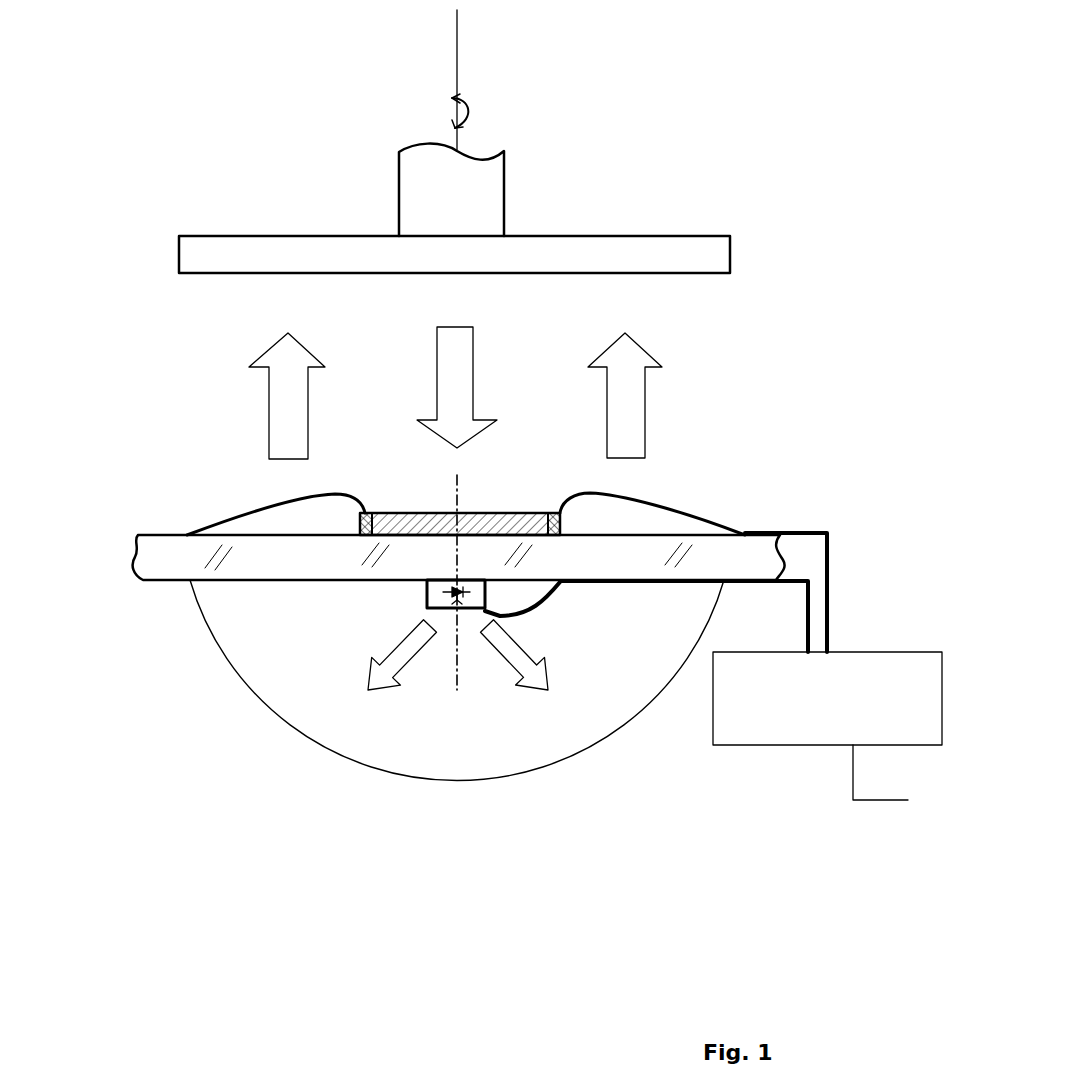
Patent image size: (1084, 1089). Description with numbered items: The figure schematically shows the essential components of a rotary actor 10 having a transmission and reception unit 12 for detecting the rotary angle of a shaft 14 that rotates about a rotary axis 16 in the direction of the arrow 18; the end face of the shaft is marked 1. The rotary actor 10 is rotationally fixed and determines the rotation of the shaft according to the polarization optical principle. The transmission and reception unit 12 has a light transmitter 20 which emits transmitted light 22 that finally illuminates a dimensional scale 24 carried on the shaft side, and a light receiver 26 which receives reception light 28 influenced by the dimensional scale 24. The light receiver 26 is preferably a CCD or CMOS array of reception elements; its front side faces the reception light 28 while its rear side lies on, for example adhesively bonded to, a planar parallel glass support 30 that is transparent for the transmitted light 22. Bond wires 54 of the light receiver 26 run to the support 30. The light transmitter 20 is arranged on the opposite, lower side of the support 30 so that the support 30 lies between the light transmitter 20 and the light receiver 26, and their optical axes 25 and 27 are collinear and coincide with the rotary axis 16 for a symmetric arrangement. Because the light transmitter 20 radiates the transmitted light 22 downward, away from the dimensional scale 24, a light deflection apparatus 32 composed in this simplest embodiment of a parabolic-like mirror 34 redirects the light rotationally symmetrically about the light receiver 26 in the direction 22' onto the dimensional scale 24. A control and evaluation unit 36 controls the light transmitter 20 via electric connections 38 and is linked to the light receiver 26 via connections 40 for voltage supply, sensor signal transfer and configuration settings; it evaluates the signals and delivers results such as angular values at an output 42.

The rotary actor 10 is at (136, 212).
The transmission and reception unit 12 is at (276, 765).
The shaft 14 is at (425, 200).
The rotary axis 16 is at (457, 43).
The arrow 18 is at (472, 120).
The object surface 1 is at (522, 183).
The dimensional scale 24 is at (590, 252).
The direction of deflected transmitted light 22' is at (455, 396).
The reception light 28 is at (457, 387).
The support 30 is at (163, 558).
The light receiver 26 is at (493, 512).
The optical axis of the light receiver 27 is at (456, 492).
The bond wires 54 is at (668, 495).
The connections 40 is at (832, 592).
The electric connections 38 is at (807, 614).
The control and evaluation unit 36 is at (841, 709).
The output 42 is at (853, 778).
The light transmitter 20 is at (427, 596).
The transmitted light 22 is at (458, 654).
The optical axis of the light transmitter 25 is at (453, 660).
The light deflection apparatus 32 is at (240, 683).
The parabolic-like mirror 34 is at (352, 763).